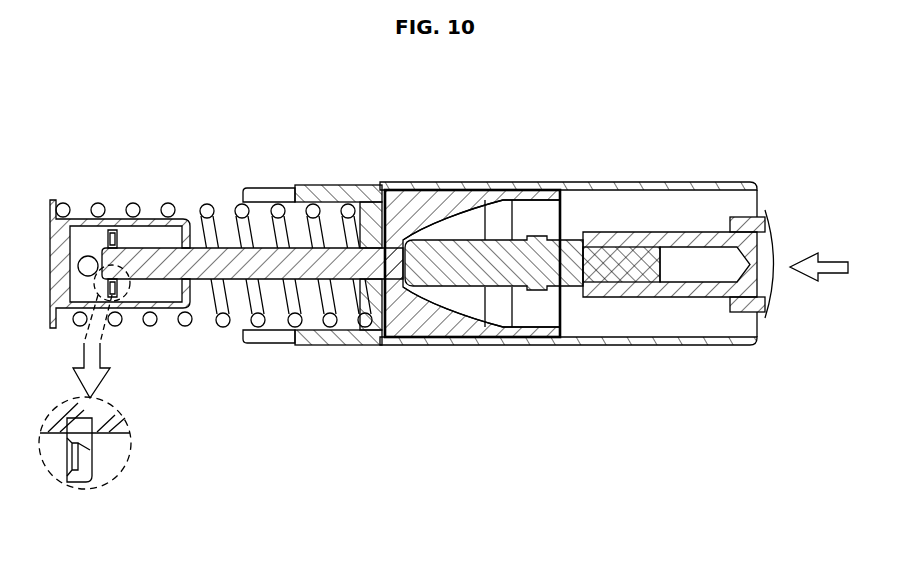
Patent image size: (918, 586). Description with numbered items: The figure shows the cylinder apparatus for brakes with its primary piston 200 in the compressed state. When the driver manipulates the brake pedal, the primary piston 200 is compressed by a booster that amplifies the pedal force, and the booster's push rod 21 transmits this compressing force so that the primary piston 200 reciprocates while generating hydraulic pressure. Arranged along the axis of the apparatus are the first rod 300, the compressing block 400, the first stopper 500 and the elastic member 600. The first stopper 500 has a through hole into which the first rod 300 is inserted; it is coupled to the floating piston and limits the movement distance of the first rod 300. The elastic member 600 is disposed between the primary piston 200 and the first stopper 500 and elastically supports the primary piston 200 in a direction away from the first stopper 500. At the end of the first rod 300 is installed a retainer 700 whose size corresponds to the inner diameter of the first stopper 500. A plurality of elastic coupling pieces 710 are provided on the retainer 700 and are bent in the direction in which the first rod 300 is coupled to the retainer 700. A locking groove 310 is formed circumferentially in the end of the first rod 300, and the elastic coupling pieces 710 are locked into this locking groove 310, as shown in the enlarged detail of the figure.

The push rod 21 is at (530, 273).
The primary piston 200 is at (620, 340).
The first rod 300 is at (272, 267).
The locking groove 310 is at (87, 440).
The compressing block 400 is at (427, 320).
The first stopper 500 is at (153, 220).
The elastic member 600 is at (221, 322).
The retainer 700 is at (110, 230).
The elastic coupling pieces 710 is at (72, 437).